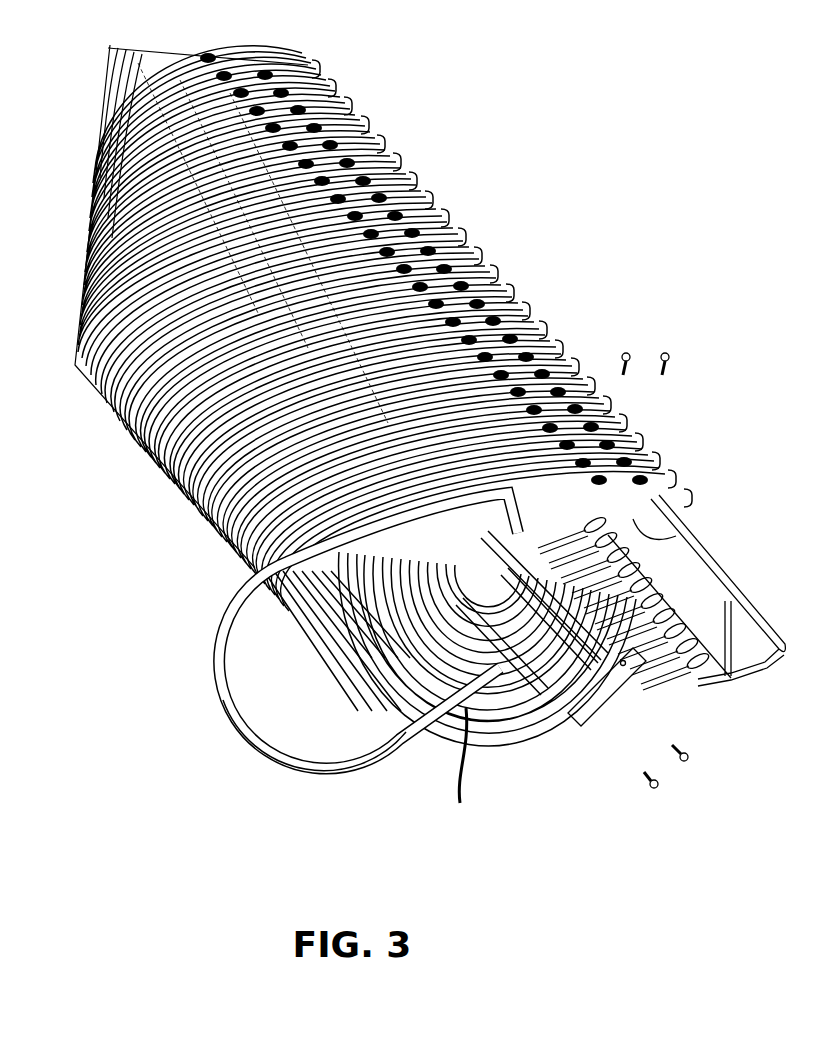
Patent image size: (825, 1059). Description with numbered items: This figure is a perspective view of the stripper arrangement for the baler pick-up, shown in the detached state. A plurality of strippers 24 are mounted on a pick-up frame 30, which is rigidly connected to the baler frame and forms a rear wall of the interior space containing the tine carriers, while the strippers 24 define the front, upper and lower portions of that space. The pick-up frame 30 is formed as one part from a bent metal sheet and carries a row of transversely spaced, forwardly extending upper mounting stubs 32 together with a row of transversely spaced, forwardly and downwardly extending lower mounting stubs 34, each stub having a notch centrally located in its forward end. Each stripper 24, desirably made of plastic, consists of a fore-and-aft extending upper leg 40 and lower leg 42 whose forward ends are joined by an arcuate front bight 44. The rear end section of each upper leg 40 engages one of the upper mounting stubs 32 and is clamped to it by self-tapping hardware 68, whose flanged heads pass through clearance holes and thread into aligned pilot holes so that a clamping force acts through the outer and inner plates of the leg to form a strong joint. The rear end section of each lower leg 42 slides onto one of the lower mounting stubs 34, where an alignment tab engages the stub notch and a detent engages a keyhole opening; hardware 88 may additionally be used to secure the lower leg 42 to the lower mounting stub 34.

The stripper 24 is at (291, 778).
The pick-up frame 30 is at (743, 597).
The upper mounting stub 32 is at (667, 533).
The lower mounting stub 34 is at (607, 697).
The upper leg 40 is at (600, 577).
The lower leg 42 is at (455, 795).
The arcuate front bight 44 is at (216, 700).
The self-tapping hardware 68 is at (658, 342).
The hardware 88 is at (684, 765).